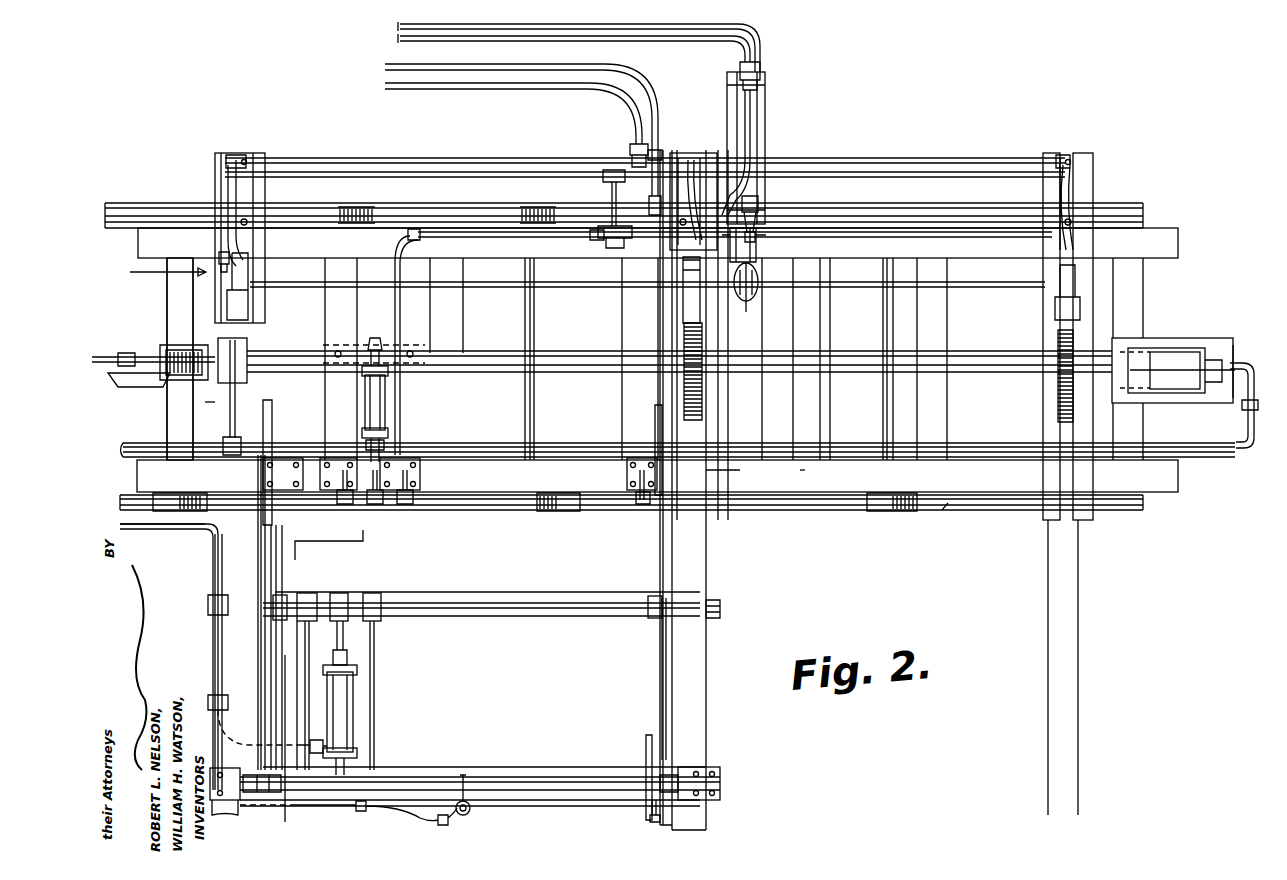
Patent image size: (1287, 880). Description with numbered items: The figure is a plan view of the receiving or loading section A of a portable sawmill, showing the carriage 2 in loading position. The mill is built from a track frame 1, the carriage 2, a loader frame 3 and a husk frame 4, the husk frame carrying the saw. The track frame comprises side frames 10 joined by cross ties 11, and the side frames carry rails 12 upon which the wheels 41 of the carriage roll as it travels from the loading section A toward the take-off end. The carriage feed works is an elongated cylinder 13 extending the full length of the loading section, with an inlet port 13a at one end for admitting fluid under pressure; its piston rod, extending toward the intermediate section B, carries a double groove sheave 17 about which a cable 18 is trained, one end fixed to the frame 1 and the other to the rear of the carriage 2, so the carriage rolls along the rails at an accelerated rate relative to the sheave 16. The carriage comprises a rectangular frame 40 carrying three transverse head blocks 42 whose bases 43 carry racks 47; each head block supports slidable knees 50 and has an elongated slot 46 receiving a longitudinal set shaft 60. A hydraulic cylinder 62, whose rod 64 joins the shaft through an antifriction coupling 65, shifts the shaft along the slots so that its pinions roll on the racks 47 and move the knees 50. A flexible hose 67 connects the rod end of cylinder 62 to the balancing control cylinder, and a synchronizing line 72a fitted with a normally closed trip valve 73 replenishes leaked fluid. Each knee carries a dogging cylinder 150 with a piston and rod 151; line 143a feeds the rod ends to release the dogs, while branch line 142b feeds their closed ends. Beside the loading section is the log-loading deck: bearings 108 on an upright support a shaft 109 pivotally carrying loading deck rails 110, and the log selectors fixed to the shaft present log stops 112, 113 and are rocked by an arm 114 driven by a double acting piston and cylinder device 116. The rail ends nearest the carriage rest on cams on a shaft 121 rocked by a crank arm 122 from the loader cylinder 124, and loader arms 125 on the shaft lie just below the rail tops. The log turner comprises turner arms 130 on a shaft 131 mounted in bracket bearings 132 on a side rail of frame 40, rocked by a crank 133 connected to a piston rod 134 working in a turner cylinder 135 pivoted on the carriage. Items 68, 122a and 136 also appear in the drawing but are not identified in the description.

The track frame 1 is at (946, 507).
The carriage 2 is at (938, 431).
The loader frame 3 is at (706, 652).
The husk frame 4 is at (1264, 364).
The side frames 10 is at (123, 197).
The cross ties 11 is at (167, 303).
The rails 12 is at (1145, 501).
The elongated cylinder 13 is at (985, 357).
The inlet port 13a is at (1236, 352).
The sheave 16 is at (288, 818).
The double groove sheave 17 is at (150, 380).
The cable 18 is at (360, 300).
The rectangular frame 40 is at (1194, 475).
The wheels 41 is at (362, 209).
The head blocks 42 is at (268, 242).
The head block base 43 is at (716, 485).
The elongated slots 46 is at (710, 437).
The racks 47 is at (1058, 400).
The knees 50 is at (245, 298).
The set shaft 60 is at (604, 291).
The hydraulically operated cylinder 62 is at (766, 113).
The piston rod 64 is at (758, 246).
The antifriction coupling 65 is at (757, 300).
The flexible hose 67 is at (762, 48).
The pipes 68 is at (705, 36).
The synchronizing line 72a is at (755, 131).
The trip valve 73 is at (760, 215).
The bearings 108 is at (690, 780).
The shaft 109 is at (568, 776).
The loading deck rails 110 is at (283, 577).
The log stop 112 is at (646, 814).
The log stop 113 is at (655, 750).
The arm 114 is at (488, 790).
The hydraulic piston and cylinder device 116 is at (472, 812).
The shaft 121 is at (478, 602).
The crank arm 122 is at (350, 635).
The hose 122a is at (325, 740).
The loader cylinder 124 is at (354, 705).
The loader arms 125 is at (345, 655).
The turner arms 130 is at (273, 418).
The shaft 131 is at (500, 485).
The bracket bearings 132 is at (625, 475).
The crank 133 is at (363, 524).
The piston rod 134 is at (386, 444).
The turner cylinder 135 is at (395, 385).
The pipe 136 is at (238, 399).
The branch line 142b is at (542, 86).
The line 143a is at (455, 67).
The dogging cylinder 150 is at (230, 205).
The piston and rod 151 is at (220, 256).
The loading section A is at (798, 474).
The intermediate section B is at (155, 265).